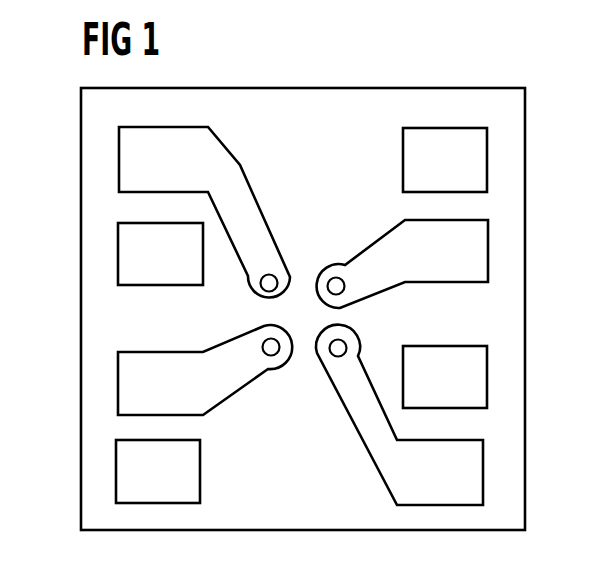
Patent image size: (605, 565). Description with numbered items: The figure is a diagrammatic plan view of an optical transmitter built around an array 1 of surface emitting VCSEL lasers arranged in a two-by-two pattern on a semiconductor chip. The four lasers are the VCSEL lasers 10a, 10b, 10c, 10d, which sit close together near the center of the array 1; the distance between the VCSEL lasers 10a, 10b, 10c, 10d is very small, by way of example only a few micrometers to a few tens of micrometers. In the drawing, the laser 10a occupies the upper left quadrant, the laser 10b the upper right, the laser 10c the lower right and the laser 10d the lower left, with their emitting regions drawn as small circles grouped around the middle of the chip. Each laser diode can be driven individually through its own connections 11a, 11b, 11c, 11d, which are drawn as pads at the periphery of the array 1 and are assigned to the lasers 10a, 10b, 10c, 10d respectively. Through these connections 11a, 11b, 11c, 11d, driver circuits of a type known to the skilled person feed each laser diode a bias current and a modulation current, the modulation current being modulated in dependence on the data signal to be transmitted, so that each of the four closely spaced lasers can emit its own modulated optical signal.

The array 1 is at (327, 318).
The VCSEL laser 10a is at (266, 285).
The VCSEL laser 10b is at (337, 285).
The VCSEL laser 10c is at (338, 350).
The VCSEL laser 10d is at (272, 350).
The connection 11a is at (125, 156).
The connection 11b is at (480, 152).
The connection 11c is at (478, 377).
The connection 11d is at (123, 382).